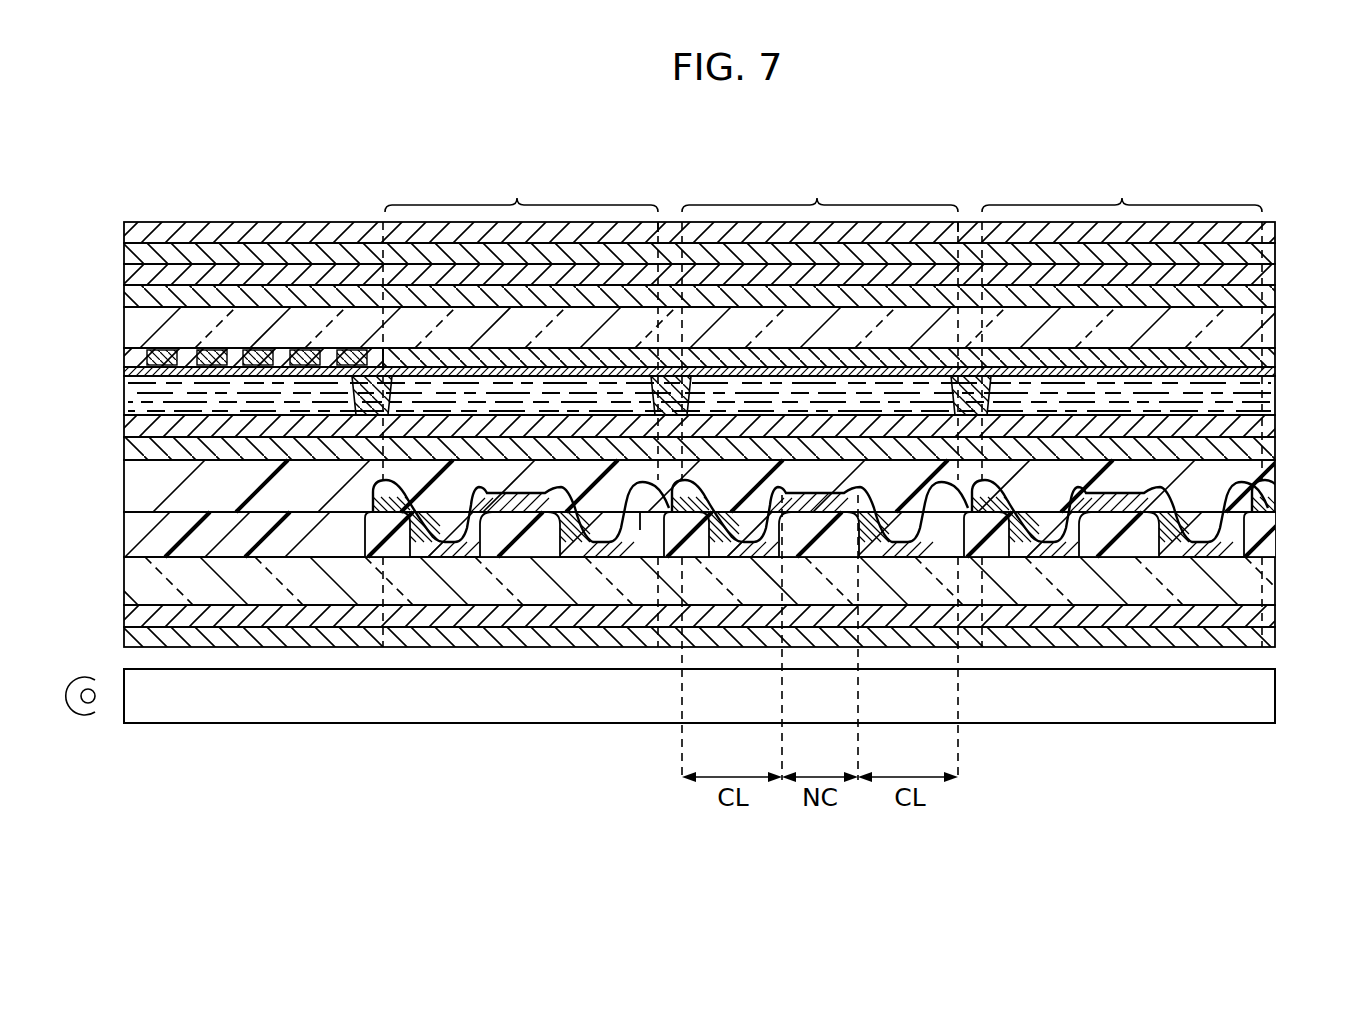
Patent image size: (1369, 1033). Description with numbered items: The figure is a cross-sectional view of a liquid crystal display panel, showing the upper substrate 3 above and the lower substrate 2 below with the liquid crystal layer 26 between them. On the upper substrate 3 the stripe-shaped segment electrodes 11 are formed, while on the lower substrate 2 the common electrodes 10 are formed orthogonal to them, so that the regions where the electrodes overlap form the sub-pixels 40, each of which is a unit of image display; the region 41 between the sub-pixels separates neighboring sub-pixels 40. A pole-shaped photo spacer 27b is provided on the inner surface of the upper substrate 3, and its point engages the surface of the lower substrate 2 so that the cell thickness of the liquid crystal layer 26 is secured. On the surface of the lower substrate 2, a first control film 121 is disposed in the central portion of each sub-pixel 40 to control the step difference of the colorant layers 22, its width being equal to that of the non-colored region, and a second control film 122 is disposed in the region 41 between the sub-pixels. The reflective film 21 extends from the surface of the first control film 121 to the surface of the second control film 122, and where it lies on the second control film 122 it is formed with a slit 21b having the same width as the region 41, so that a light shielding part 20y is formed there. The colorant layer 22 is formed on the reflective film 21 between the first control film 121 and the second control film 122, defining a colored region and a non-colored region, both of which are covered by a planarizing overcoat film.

The upper substrate 3 is at (721, 299).
The lower substrate 2 is at (724, 603).
The liquid crystal layer 26 is at (126, 388).
The photo spacer 27b is at (366, 390).
The segment electrode 11 is at (1248, 358).
The common electrode 10 is at (1263, 451).
The slit 21b is at (662, 506).
The light shielding part 20y is at (676, 488).
The colorant layer 22 is at (418, 548).
The first control film 121 is at (520, 545).
The reflective film 21 is at (577, 547).
The second control film 122 is at (651, 546).
The sub-pixel 40 is at (823, 189).
The region between the sub-pixels 41 is at (965, 196).